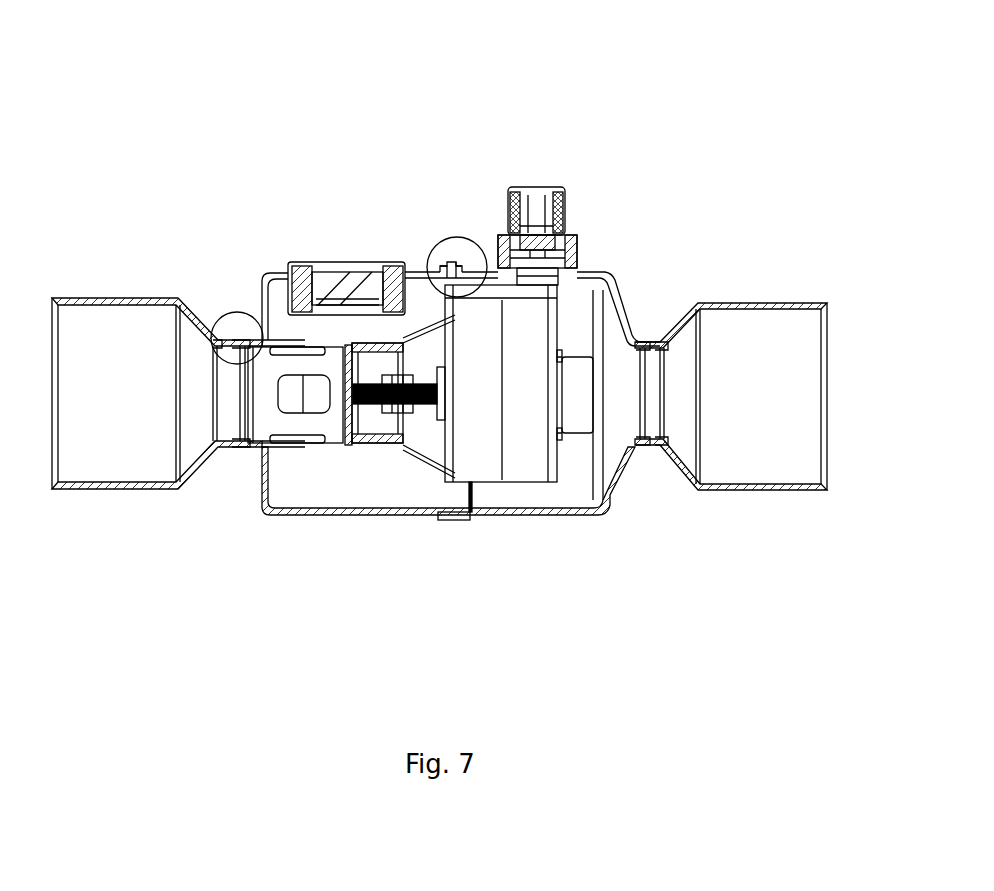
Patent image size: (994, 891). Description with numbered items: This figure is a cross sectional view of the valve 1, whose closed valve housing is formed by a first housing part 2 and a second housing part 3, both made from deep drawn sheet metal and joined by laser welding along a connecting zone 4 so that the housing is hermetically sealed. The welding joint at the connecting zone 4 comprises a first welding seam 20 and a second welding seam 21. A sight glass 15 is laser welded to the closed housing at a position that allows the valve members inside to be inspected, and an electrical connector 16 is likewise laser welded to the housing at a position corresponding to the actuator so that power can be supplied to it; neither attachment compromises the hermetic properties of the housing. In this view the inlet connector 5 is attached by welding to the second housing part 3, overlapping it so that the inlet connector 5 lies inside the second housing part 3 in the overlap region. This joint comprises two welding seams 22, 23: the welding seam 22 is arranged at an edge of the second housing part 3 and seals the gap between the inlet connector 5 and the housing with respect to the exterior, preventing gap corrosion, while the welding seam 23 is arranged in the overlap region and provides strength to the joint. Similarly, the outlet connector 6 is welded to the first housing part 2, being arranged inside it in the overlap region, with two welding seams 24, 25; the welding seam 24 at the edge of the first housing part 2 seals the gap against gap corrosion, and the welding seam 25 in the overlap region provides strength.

The valve 1 is at (710, 75).
The first housing part 2 is at (330, 514).
The second housing part 3 is at (580, 513).
The connecting zone 4 is at (458, 262).
The inlet connector 5 is at (753, 302).
The outlet connector 6 is at (157, 369).
The sight glass 15 is at (300, 268).
The electrical connector 16 is at (564, 233).
The first welding seam 20 is at (443, 262).
The second welding seam 21 is at (457, 262).
The welding seam 22 is at (657, 334).
The welding seam 23 is at (645, 334).
The welding seam 24 is at (218, 334).
The welding seam 25 is at (235, 334).